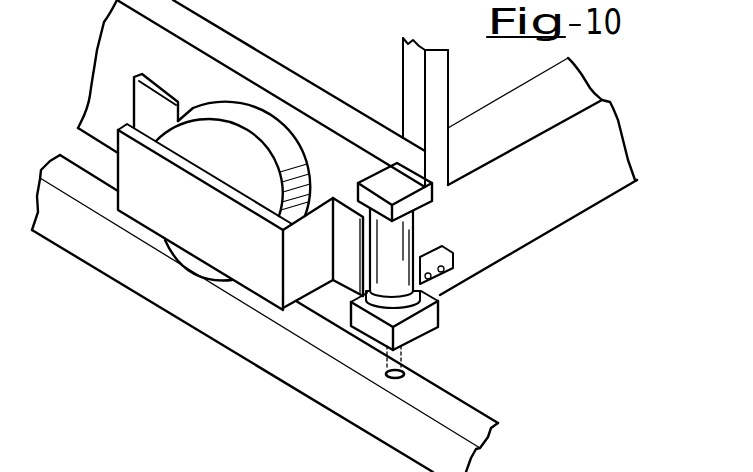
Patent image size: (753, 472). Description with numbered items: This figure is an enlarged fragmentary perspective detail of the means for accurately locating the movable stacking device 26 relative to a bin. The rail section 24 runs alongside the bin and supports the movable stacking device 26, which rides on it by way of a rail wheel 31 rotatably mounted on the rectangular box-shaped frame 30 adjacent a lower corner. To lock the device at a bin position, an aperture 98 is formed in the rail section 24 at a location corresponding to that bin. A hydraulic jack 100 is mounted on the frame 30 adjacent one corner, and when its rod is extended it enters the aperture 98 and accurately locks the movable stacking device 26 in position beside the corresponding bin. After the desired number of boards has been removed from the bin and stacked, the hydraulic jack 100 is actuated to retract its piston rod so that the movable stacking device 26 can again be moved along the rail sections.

The rail section 24 is at (442, 402).
The movable stacking device 26 is at (363, 112).
The frame 30 is at (548, 217).
The rail wheel 31 is at (235, 171).
The aperture 98 is at (404, 372).
The hydraulic jack 100 is at (411, 242).